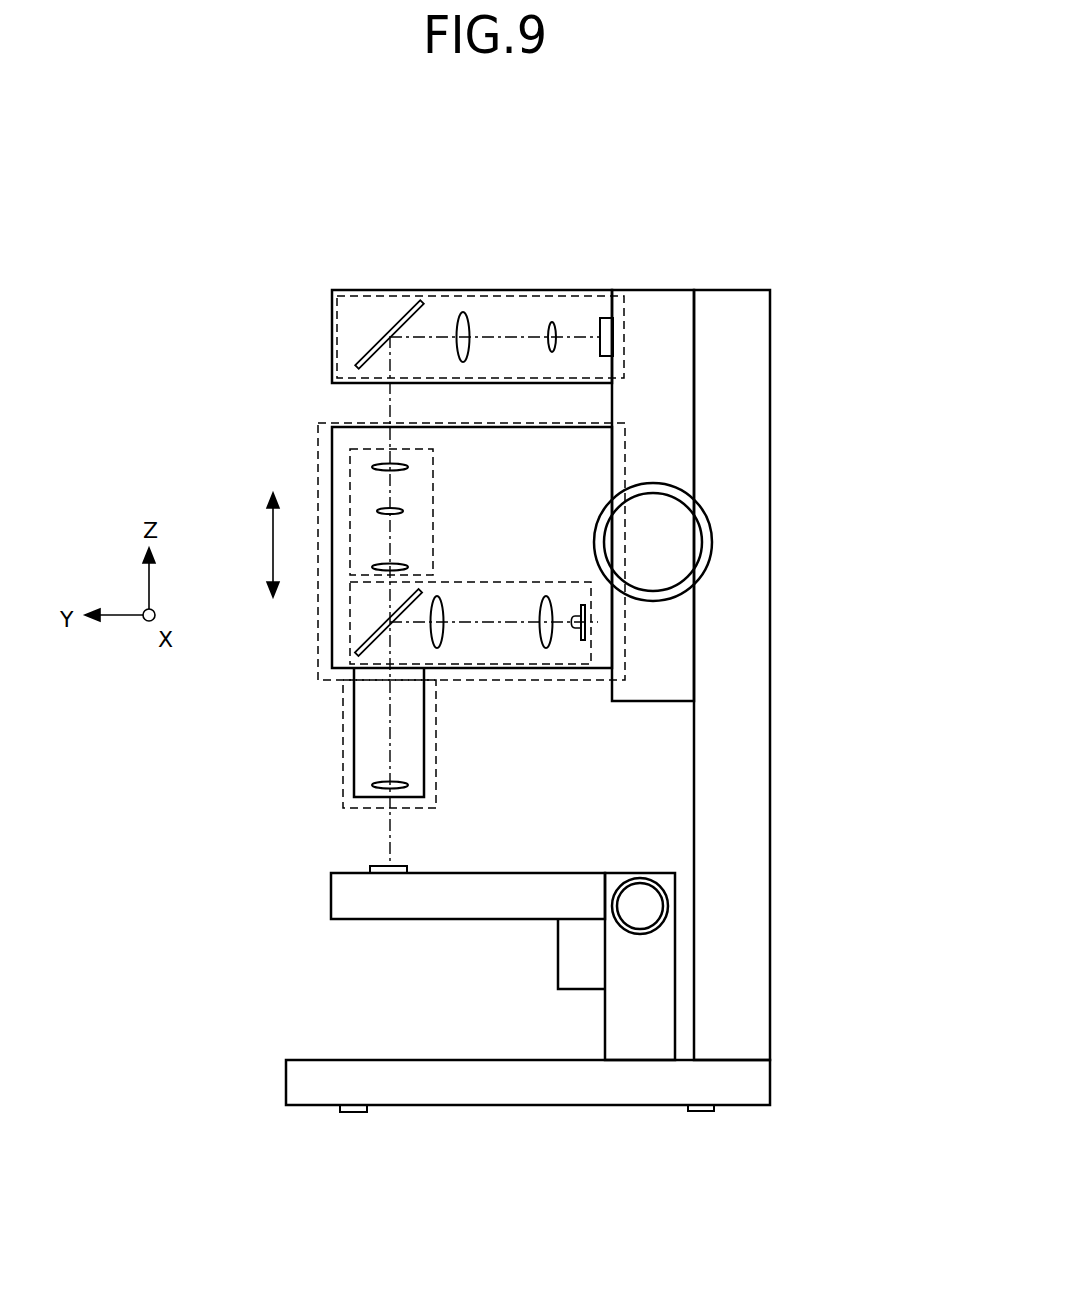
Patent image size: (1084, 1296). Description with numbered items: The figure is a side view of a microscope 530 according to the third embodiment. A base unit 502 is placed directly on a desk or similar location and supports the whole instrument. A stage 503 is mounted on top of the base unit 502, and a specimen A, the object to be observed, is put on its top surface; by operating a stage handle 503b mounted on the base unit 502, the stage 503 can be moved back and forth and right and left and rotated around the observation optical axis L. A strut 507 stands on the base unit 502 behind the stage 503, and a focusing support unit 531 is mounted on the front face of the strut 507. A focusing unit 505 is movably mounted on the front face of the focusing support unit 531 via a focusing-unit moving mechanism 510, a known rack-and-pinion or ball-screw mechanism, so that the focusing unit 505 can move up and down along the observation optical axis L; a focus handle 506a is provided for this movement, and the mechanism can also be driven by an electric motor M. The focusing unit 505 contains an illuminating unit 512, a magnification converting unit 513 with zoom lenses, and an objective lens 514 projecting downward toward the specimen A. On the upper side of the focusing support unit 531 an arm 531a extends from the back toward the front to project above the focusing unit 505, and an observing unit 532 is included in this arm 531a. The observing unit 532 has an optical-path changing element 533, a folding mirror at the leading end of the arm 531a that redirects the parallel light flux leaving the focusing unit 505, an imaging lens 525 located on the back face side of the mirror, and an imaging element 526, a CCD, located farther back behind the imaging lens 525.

The microscope 530 is at (786, 217).
The focusing support unit 531 is at (644, 270).
The arm 531a is at (356, 313).
The observing unit 532 is at (513, 296).
The optical-path changing element 533 is at (372, 347).
The imaging lens 525 is at (464, 312).
The imaging element 526 is at (604, 318).
The focusing-unit moving mechanism 510 is at (620, 468).
The focusing unit 505 is at (318, 437).
The magnification converting unit 513 is at (350, 553).
The illuminating unit 512 is at (350, 652).
The objective lens 514 is at (365, 747).
The strut 507 is at (742, 558).
The focus handle 506a is at (667, 541).
The electric motor M is at (668, 560).
The observation optical axis L is at (387, 846).
The specimen A is at (397, 866).
The stage 503 is at (345, 903).
The stage handle 503b is at (640, 907).
The base unit 502 is at (577, 1092).